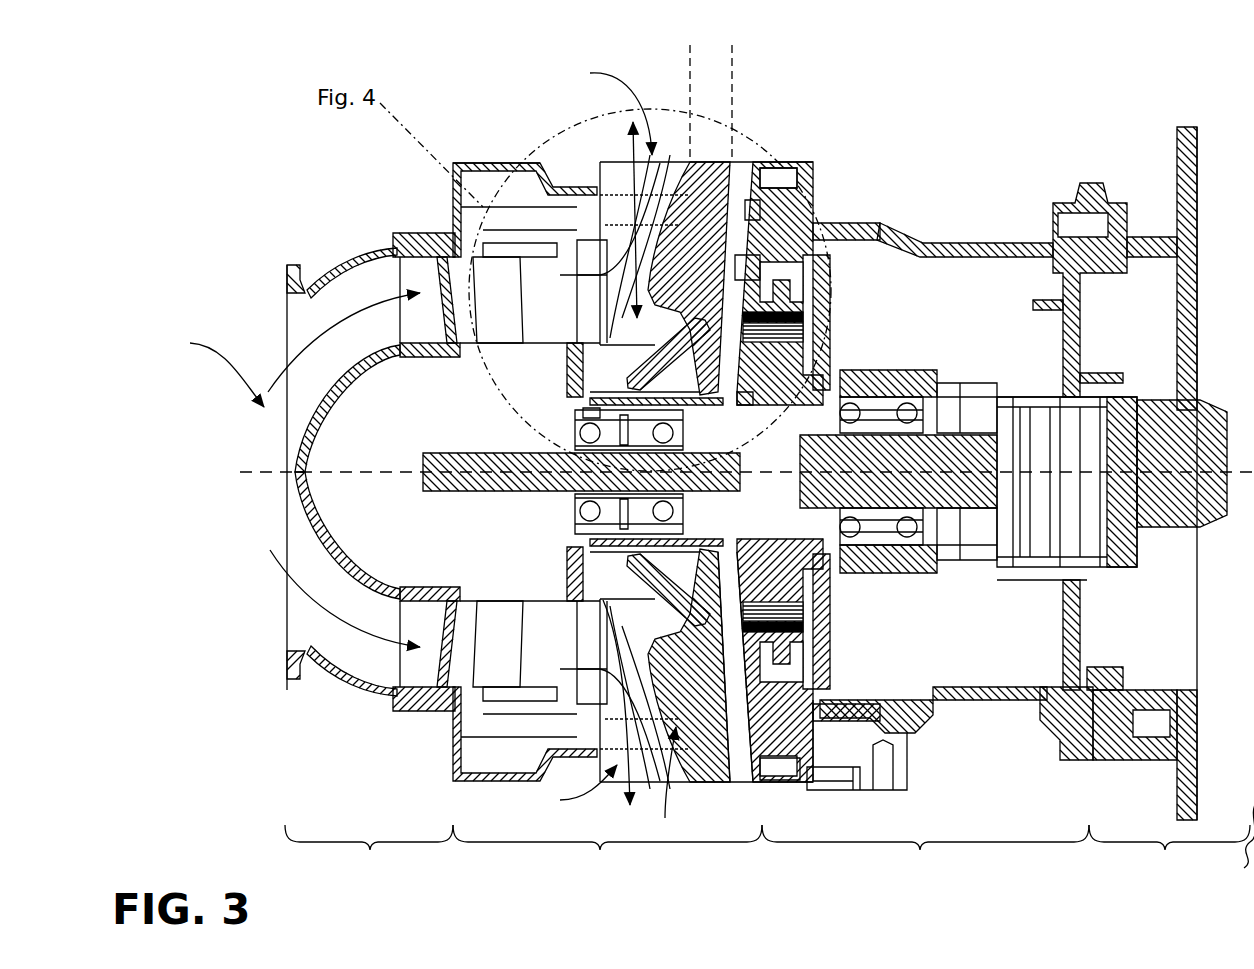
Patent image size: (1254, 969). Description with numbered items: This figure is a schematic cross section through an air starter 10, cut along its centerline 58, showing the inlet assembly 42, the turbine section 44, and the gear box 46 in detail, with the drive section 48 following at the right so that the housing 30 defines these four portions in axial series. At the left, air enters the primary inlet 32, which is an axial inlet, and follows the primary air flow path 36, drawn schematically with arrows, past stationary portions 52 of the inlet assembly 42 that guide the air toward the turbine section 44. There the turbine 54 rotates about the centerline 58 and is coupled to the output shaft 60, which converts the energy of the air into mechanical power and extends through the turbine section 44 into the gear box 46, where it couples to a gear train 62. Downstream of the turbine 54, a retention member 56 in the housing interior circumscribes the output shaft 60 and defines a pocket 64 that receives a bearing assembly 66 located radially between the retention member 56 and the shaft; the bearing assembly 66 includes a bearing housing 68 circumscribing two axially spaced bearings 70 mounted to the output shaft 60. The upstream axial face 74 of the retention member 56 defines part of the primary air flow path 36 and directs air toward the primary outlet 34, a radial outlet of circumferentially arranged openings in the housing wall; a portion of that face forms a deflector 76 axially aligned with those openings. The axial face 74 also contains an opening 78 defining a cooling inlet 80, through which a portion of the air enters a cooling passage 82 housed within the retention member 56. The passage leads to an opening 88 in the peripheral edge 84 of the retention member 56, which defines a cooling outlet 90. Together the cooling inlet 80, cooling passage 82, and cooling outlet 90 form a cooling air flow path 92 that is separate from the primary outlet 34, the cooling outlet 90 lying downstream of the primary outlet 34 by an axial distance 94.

The air starter 10 is at (1092, 118).
The housing 30 is at (516, 158).
The primary inlet 32 is at (210, 367).
The primary outlet 34 is at (592, 438).
The primary air flow path 36 is at (343, 313).
The inlet assembly 42 is at (372, 559).
The turbine section 44 is at (607, 855).
The gear box 46 is at (942, 628).
The drive section 48 is at (1171, 506).
The stationary portions 52 is at (392, 258).
The turbine 54 is at (445, 255).
The retention member 56 is at (705, 155).
The centerline 58 is at (250, 497).
The output shaft 60 is at (510, 500).
The gear train 62 is at (817, 308).
The pocket 64 is at (727, 755).
The bearing assembly 66 is at (540, 543).
The bearing housing 68 is at (568, 408).
The bearings 70 is at (590, 425).
The upstream axial face 74 is at (669, 785).
The deflector 76 is at (683, 160).
The opening 78 is at (675, 160).
The cooling inlet 80 is at (662, 160).
The cooling passage 82 is at (749, 265).
The peripheral edge 84 is at (768, 160).
The opening 88 is at (747, 158).
The cooling outlet 90 is at (738, 160).
The cooling air flow path 92 is at (750, 210).
The axial distance 94 is at (691, 50).